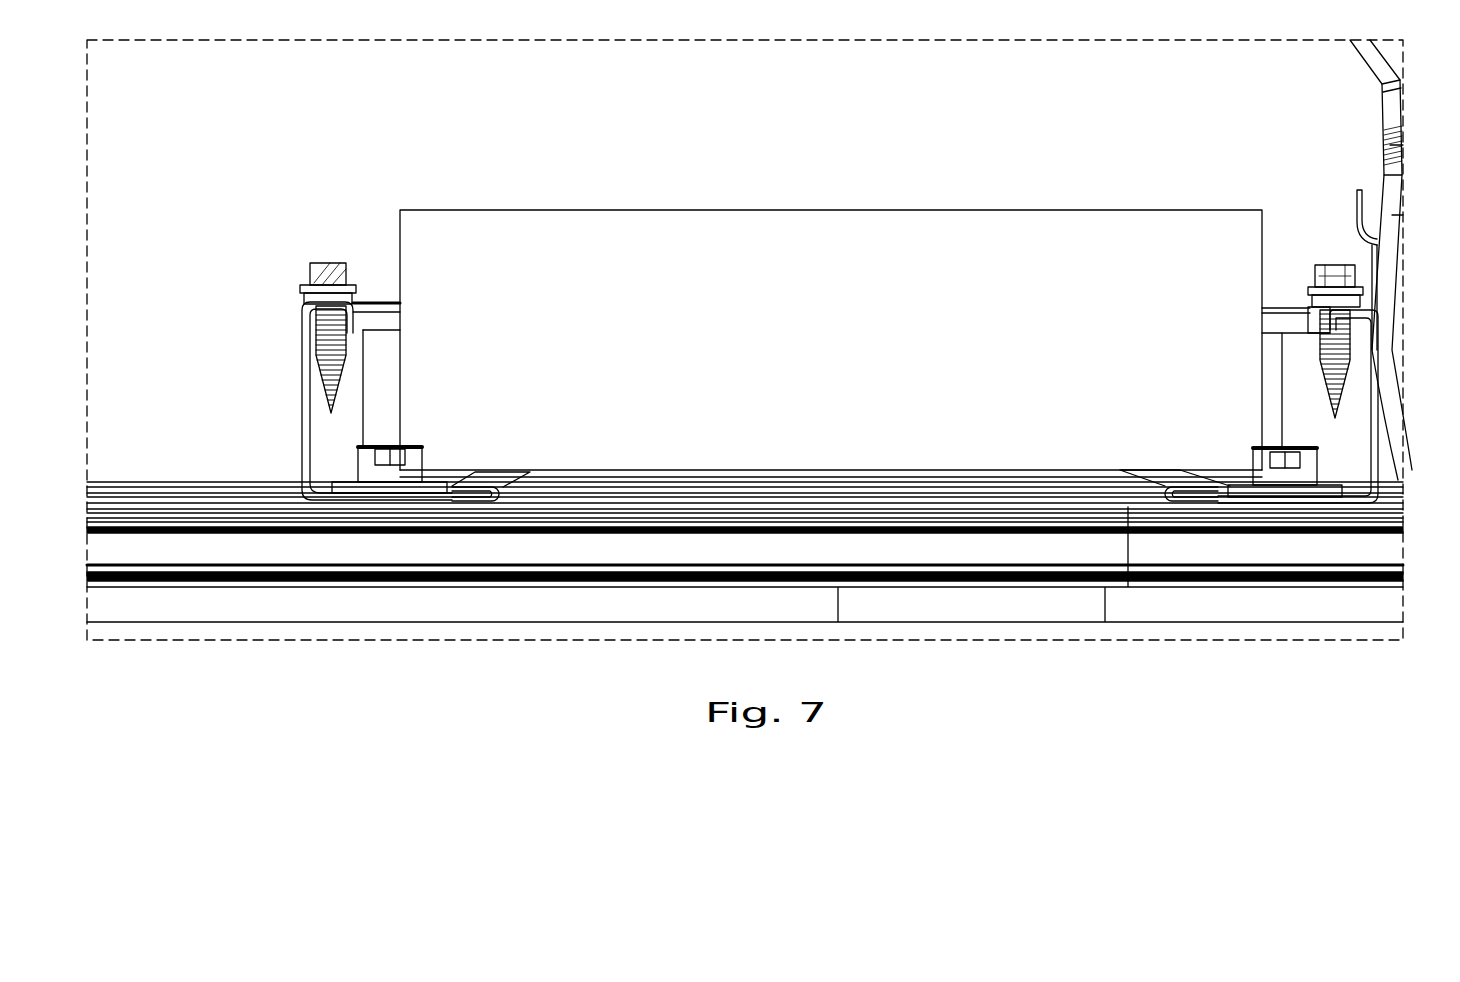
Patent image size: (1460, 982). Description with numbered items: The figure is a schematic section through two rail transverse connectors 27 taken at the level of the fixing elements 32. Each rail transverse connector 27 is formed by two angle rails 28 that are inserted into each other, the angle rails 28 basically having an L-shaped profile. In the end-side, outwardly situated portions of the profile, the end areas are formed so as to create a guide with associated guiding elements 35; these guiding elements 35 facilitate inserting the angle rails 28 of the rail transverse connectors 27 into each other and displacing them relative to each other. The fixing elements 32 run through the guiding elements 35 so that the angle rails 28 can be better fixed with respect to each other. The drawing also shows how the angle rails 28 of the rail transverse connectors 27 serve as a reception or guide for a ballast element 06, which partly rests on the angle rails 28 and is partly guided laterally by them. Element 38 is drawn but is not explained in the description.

The rail transverse connector 27 is at (322, 248).
The fixing element 32 is at (332, 273).
The bracket 38 is at (355, 295).
The ballast element 06 is at (780, 354).
The guiding element 35 is at (468, 480).
The angle rail 28 is at (487, 487).